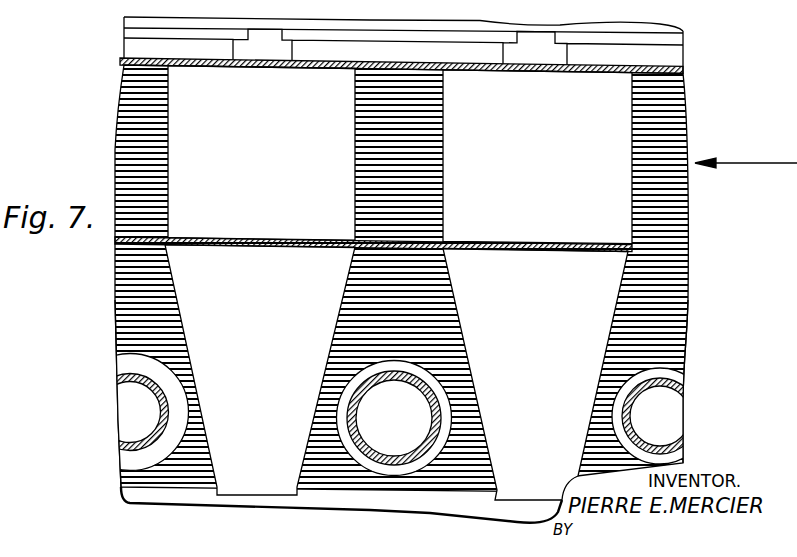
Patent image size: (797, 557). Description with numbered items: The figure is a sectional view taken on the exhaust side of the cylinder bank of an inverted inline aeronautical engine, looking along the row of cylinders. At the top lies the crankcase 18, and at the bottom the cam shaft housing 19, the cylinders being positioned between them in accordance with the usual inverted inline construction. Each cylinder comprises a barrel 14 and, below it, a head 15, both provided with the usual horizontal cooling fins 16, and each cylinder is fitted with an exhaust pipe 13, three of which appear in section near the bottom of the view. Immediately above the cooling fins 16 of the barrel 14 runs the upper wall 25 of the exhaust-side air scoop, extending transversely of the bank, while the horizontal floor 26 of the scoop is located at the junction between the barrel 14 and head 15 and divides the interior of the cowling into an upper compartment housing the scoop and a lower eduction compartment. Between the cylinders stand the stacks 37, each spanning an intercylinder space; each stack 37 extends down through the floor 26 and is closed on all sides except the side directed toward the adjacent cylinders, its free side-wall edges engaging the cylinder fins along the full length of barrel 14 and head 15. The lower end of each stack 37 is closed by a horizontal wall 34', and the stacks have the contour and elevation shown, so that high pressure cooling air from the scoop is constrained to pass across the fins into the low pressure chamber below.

The exhaust pipe 13 is at (398, 463).
The cylinder barrel 14 is at (441, 135).
The cylinder head 15 is at (440, 312).
The cooling fins 16 is at (438, 176).
The crankcase 18 is at (670, 28).
The cam shaft housing 19 is at (155, 497).
The upper wall 25 is at (668, 64).
The floor 26 is at (574, 224).
The horizontal wall 34' is at (396, 400).
The stack 37 is at (317, 90).